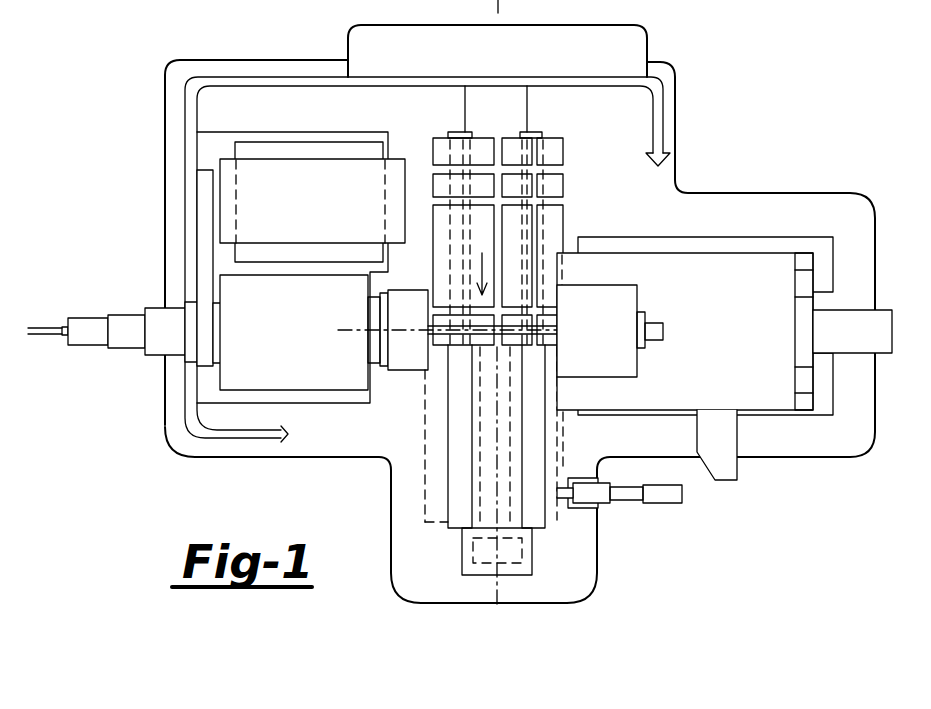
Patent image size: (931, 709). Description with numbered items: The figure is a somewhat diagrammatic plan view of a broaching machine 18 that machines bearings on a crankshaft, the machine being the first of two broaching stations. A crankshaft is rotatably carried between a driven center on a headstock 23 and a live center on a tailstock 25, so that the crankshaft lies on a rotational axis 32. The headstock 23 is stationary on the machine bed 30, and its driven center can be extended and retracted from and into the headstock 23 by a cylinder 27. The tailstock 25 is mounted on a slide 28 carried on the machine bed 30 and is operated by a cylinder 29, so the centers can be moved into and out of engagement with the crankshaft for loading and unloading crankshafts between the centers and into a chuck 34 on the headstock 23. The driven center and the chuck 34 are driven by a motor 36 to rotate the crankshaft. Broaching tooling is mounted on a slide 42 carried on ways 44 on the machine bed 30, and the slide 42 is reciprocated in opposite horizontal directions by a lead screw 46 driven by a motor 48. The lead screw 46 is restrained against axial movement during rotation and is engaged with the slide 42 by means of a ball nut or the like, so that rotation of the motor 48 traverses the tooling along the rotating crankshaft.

The broaching machine 18 is at (162, 393).
The headstock 23 is at (337, 380).
The tailstock 25 is at (625, 302).
The cylinder 27 is at (97, 318).
The slide 28 is at (740, 335).
The cylinder 29 is at (861, 343).
The machine bed 30 is at (390, 495).
The rotational axis 32 is at (357, 330).
The chuck 34 is at (407, 365).
The motor 36 is at (322, 207).
The slide 42 is at (555, 137).
The ways 44 is at (467, 130).
The lead screw 46 is at (497, 607).
The motor 48 is at (472, 575).